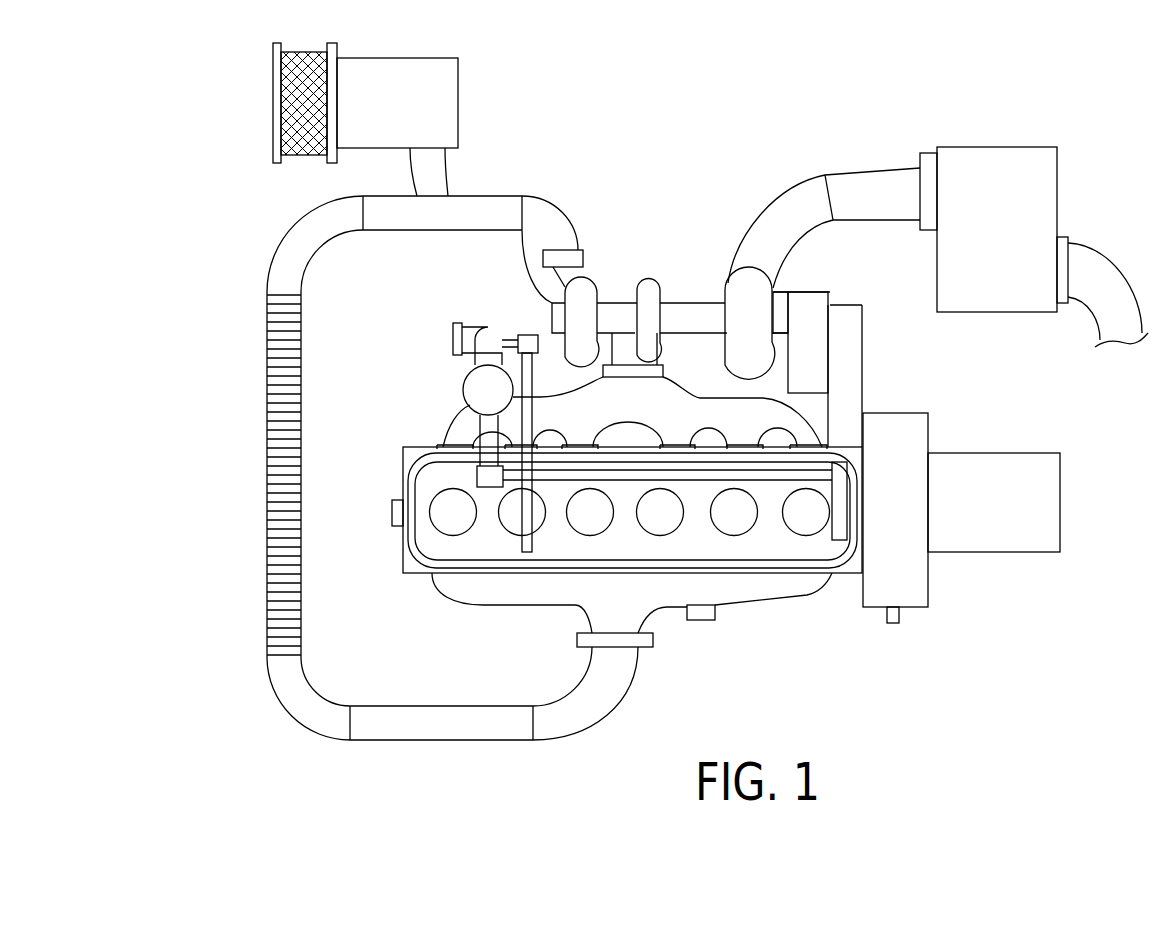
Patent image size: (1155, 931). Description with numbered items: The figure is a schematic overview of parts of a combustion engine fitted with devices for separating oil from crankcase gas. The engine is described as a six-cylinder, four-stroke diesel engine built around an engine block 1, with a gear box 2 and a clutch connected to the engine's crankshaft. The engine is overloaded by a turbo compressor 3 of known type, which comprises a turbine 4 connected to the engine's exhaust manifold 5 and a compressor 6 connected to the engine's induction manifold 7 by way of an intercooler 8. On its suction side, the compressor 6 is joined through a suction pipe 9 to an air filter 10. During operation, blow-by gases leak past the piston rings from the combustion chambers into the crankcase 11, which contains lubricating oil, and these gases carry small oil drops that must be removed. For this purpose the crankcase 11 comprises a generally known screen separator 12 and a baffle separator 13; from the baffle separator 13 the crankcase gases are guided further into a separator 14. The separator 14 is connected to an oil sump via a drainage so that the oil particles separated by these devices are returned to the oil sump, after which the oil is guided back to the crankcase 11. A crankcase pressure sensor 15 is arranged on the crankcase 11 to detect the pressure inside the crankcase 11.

The engine block 1 is at (402, 562).
The gear box 2 is at (1002, 525).
The turbo compressor 3 is at (607, 278).
The turbine 4 is at (655, 292).
The exhaust manifold 5 is at (675, 405).
The compressor 6 is at (585, 293).
The induction manifold 7 is at (488, 590).
The intercooler 8 is at (268, 395).
The suction pipe 9 is at (432, 173).
The air filter 10 is at (256, 100).
The crankcase 11 is at (453, 547).
The screen separator 12 is at (840, 533).
The baffle separator 13 is at (765, 472).
The separator 14 is at (480, 385).
The crankcase pressure sensor 15 is at (392, 510).